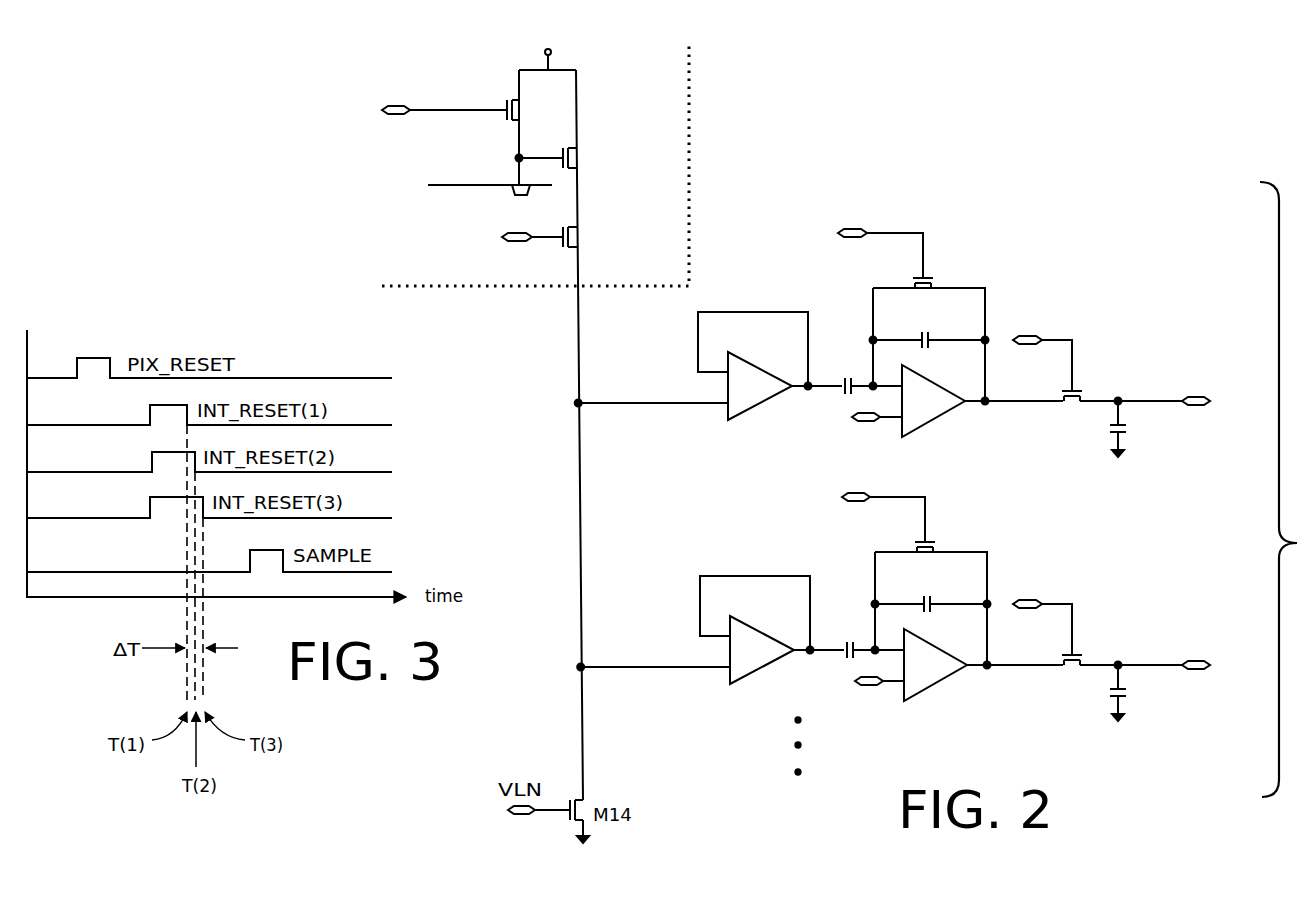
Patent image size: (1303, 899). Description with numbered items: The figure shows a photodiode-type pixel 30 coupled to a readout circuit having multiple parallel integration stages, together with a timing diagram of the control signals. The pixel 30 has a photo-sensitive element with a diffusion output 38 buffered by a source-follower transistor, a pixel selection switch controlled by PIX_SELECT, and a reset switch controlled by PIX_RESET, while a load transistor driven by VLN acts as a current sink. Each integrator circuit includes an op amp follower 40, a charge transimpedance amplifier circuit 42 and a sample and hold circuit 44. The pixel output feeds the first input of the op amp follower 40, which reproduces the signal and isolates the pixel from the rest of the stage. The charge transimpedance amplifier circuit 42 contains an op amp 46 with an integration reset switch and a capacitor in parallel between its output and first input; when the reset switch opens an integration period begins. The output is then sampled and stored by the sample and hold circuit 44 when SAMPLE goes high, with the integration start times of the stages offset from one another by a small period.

The photodiode-type pixel 30 is at (650, 102).
The diffusion output 38 is at (508, 198).
The op amp follower 40 is at (753, 425).
The charge transimpedance amplifier circuit 42 is at (987, 425).
The sample and hold circuit 44 is at (1070, 452).
The op amp 46 is at (935, 422).